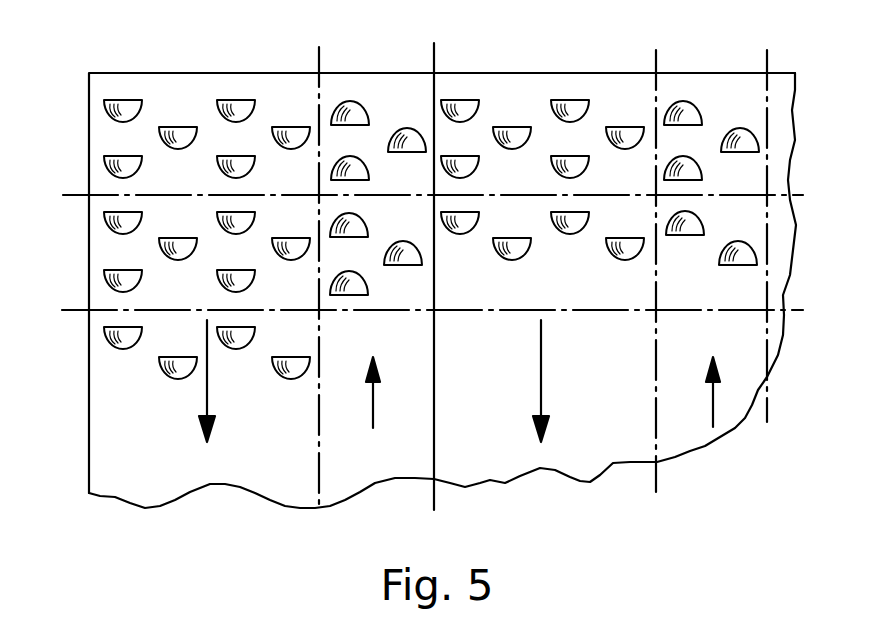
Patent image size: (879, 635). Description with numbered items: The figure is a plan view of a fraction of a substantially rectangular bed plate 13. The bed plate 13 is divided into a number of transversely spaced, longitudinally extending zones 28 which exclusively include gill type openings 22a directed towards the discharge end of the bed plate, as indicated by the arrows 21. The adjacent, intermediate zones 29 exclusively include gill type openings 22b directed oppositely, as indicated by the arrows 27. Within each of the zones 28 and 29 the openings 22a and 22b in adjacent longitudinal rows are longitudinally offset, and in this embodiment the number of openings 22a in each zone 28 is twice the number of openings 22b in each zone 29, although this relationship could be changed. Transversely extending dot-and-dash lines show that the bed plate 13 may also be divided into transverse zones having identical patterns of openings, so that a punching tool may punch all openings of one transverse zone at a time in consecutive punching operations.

The bed plate 13 is at (103, 249).
The arrows 21 is at (207, 398).
The gill type openings 22a is at (177, 127).
The gill type openings 22b is at (344, 100).
The arrows 27 is at (373, 407).
The zones 28 is at (158, 88).
The intermediate zones 29 is at (388, 88).